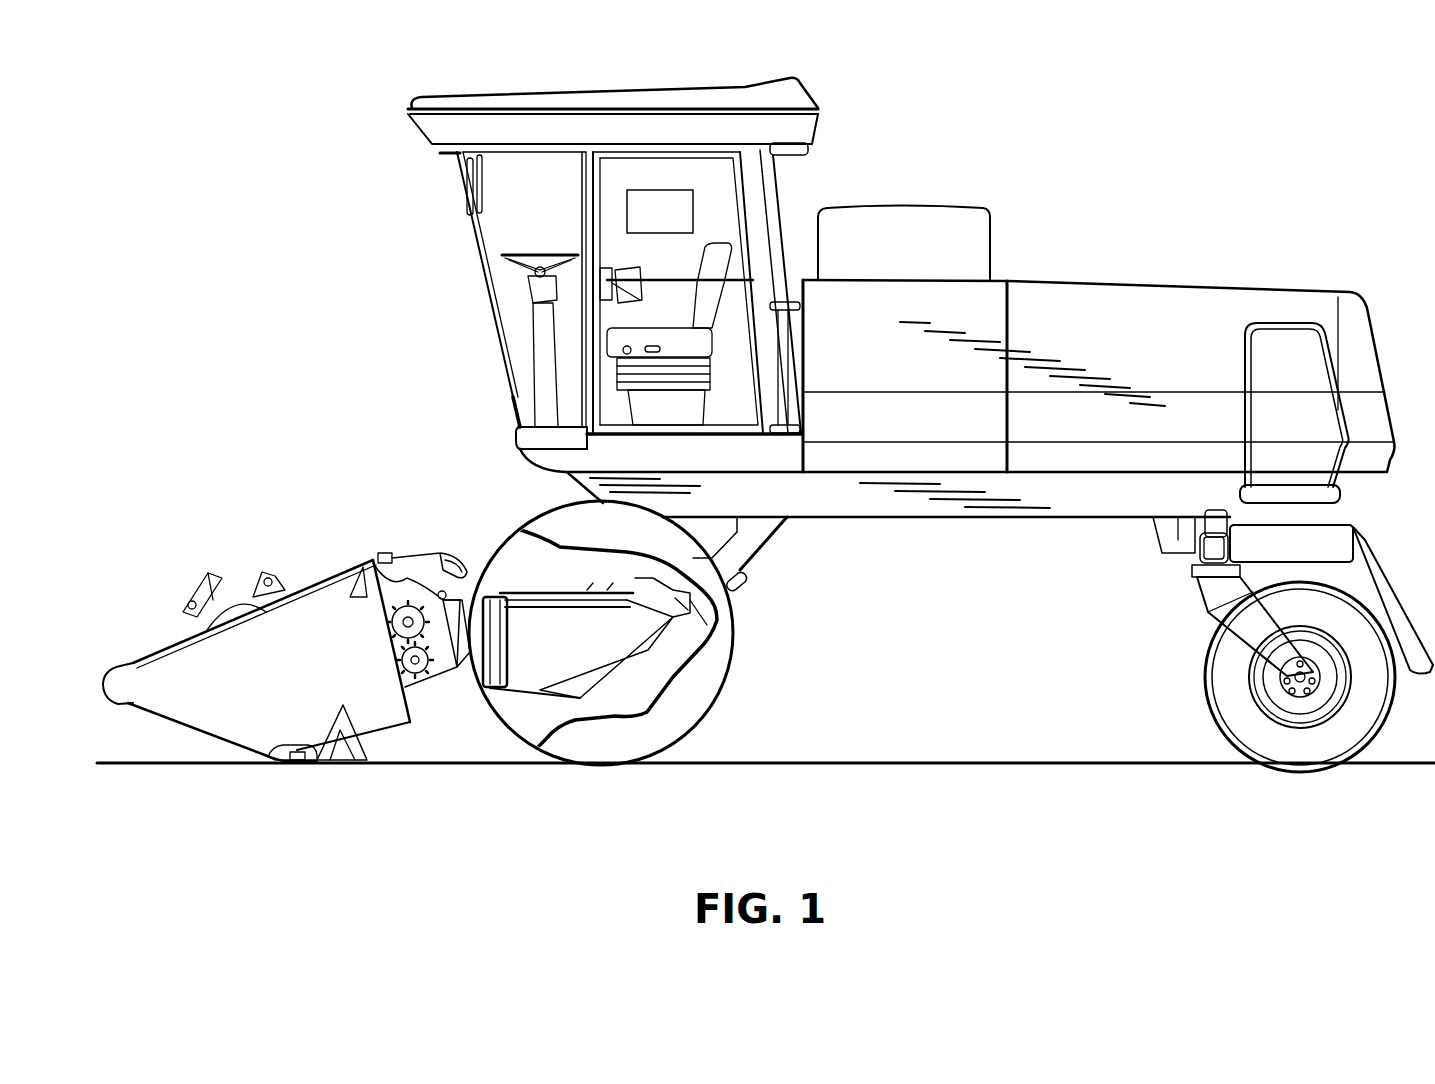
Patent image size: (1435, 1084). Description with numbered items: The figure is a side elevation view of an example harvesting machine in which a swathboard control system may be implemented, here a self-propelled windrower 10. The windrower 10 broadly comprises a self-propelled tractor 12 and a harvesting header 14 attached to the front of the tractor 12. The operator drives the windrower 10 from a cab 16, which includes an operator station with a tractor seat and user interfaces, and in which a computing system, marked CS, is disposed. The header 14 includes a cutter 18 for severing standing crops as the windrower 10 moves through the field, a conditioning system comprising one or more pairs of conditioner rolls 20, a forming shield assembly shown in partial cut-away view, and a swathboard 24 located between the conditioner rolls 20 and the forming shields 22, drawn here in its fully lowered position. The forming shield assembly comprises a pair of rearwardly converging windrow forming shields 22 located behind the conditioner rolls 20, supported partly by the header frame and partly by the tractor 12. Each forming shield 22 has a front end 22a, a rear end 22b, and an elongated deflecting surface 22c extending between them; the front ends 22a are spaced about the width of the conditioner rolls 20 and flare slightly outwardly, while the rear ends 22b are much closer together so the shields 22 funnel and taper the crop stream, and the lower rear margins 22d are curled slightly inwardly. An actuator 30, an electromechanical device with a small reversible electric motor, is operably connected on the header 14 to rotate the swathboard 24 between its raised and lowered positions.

The self-propelled windrower 10 is at (1025, 248).
The self-propelled tractor 12 is at (1170, 300).
The harvesting header 14 is at (317, 577).
The cab 16 is at (760, 185).
The cutter 18 is at (283, 762).
The conditioner rolls 20 is at (392, 624).
The windrow forming shields 22 is at (632, 691).
The front end 22a is at (484, 673).
The rear end 22b is at (690, 619).
The elongated deflecting surface 22c is at (527, 673).
The lower rear margin 22d is at (673, 665).
The swathboard 24 is at (468, 585).
The actuator 30 is at (414, 548).